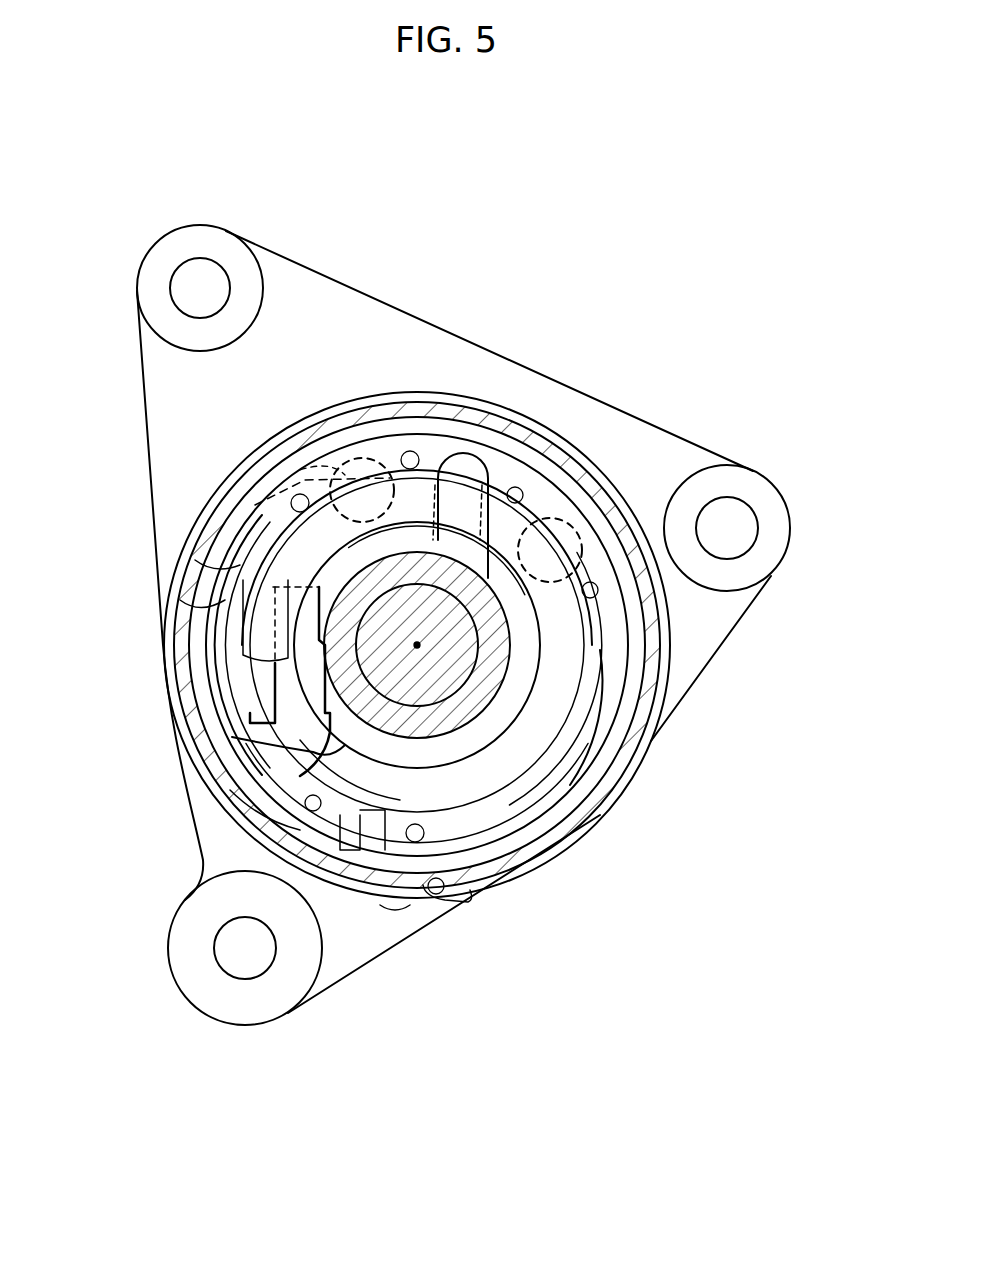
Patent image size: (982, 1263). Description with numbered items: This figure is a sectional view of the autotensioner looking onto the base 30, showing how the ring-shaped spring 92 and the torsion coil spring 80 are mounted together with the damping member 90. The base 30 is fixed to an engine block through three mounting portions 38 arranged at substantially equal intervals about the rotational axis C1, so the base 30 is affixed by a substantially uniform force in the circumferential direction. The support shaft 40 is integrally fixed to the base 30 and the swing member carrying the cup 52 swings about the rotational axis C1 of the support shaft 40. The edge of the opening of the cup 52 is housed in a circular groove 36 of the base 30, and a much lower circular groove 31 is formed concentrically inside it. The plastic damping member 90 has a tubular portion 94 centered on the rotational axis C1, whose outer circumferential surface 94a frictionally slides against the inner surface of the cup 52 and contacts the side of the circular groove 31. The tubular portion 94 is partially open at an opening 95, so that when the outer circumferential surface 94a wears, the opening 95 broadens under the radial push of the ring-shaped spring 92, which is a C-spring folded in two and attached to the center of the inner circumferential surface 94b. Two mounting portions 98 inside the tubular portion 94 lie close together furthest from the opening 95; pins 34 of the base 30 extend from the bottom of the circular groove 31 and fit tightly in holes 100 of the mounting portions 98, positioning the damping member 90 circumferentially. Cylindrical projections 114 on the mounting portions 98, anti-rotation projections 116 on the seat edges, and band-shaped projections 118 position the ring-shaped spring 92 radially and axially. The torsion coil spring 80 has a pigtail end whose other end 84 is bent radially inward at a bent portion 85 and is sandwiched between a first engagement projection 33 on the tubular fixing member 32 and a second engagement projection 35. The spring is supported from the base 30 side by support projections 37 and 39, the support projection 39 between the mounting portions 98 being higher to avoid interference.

The base 30 is at (180, 990).
The circular groove 31 is at (593, 757).
The tubular fixing member 32 is at (470, 712).
The first engagement projection 33 is at (220, 800).
The pins 34 is at (363, 487).
The second engagement projection 35 is at (282, 690).
The circular groove 36 is at (437, 895).
The support projection 37 is at (630, 710).
The mounting portions 38 is at (175, 250).
The support projection 39 is at (538, 460).
The support shaft 40 is at (425, 685).
The cup 52 is at (500, 480).
The torsion coil spring 80 is at (215, 568).
The other end 84 is at (290, 742).
The bent portion 85 is at (255, 825).
The damping member 90 is at (197, 604).
The ring-shaped spring 92 is at (578, 470).
The tubular portion 94 is at (640, 640).
The outer circumferential surface 94a is at (655, 683).
The inner circumferential surface 94b is at (645, 660).
The opening 95 is at (395, 905).
The mounting portions 98 is at (430, 490).
The holes 100 is at (340, 455).
The cylindrical projections 114 is at (410, 452).
The anti-rotation projections 116 is at (258, 852).
The band-shaped projections 118 is at (237, 650).
The rotational axis C1 is at (553, 763).